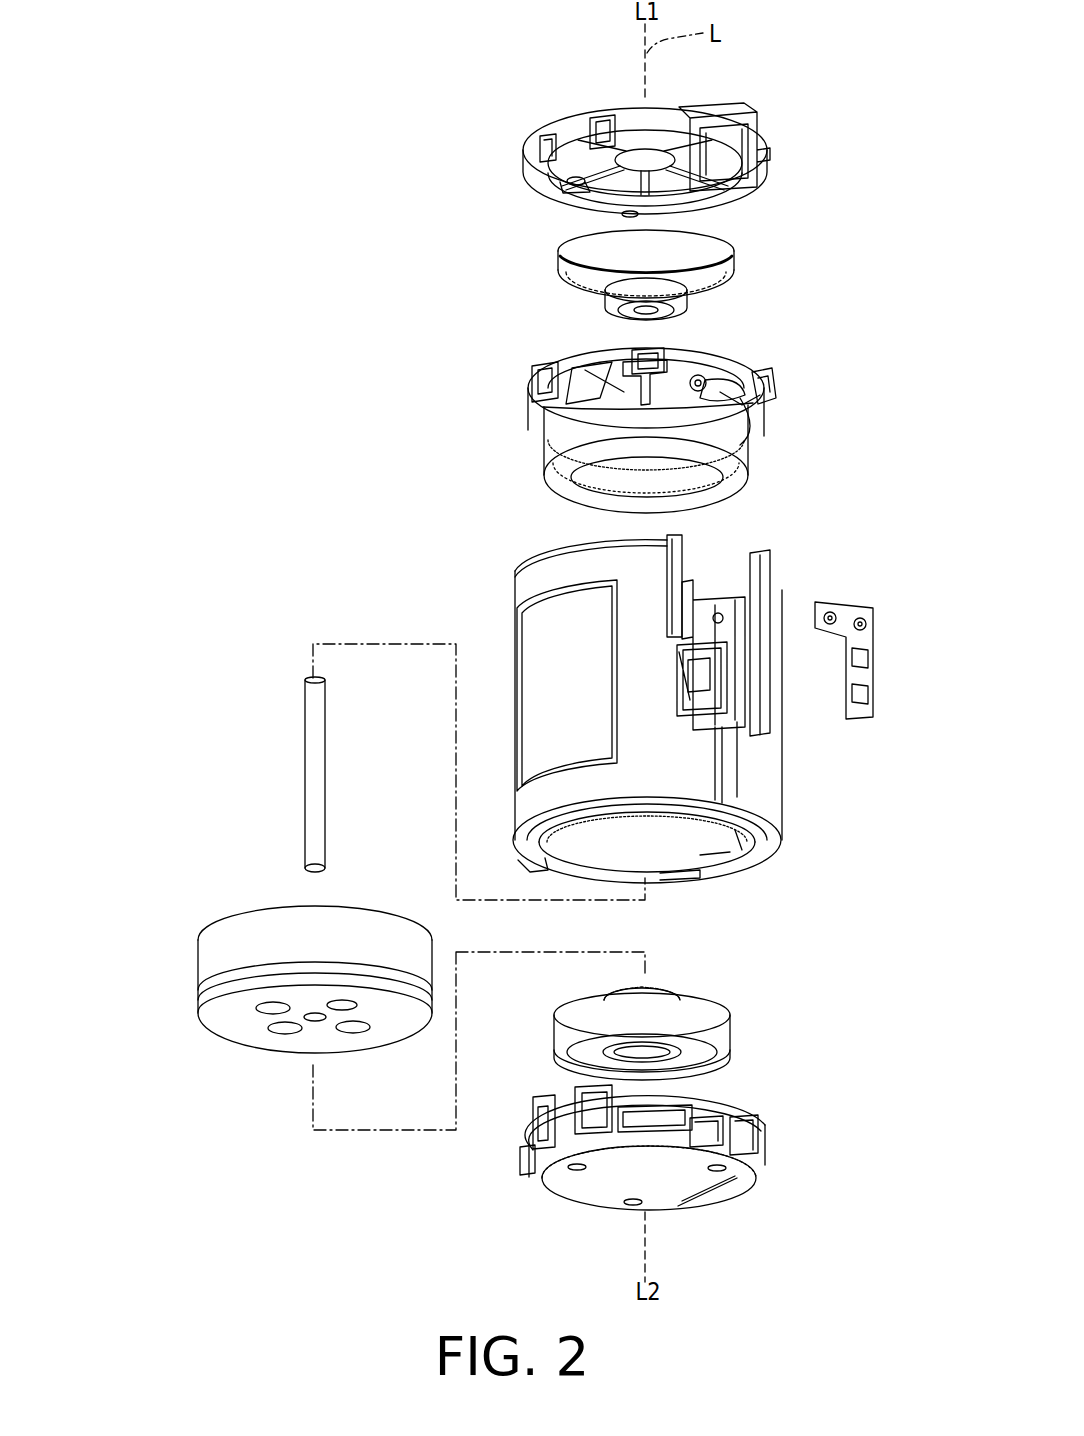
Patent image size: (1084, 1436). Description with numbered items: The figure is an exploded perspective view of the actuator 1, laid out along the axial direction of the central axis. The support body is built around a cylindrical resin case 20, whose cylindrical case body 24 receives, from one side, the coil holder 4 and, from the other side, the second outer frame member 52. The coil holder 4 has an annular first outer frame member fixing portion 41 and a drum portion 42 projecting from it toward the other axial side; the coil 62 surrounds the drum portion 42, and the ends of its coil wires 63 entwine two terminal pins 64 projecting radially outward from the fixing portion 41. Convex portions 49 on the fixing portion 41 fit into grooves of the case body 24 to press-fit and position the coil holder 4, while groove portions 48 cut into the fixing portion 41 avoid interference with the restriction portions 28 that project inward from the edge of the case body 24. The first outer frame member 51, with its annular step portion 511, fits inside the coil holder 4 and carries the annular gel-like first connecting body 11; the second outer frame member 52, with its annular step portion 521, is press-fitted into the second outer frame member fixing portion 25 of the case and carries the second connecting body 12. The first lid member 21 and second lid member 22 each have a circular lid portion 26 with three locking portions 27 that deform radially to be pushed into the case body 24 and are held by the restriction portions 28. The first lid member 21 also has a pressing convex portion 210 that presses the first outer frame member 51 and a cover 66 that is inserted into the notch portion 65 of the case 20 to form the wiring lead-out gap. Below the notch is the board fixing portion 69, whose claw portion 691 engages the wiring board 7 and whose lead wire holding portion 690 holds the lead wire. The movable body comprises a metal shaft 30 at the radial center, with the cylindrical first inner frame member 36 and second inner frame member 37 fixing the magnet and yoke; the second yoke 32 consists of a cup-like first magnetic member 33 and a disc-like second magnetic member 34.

The actuator 1 is at (279, 114).
The first lid member 21 is at (678, 145).
The lid portion 26 is at (572, 122).
The locking portion 27 is at (600, 124).
The pressing convex portion 210 is at (568, 181).
The cover 66 is at (771, 99).
The first connecting body 11 is at (697, 277).
The first outer frame member 51 is at (686, 274).
The annular step portion 511 is at (727, 288).
The first inner frame member 36 is at (613, 298).
The convex portion 49 is at (648, 350).
The terminal pin 64 is at (704, 378).
The groove portion 48 is at (597, 375).
The coil holder 4 is at (694, 414).
The first outer frame member fixing portion 41 is at (537, 435).
The coil 62 is at (553, 449).
The coil wire 63 is at (710, 390).
The drum portion 42 is at (737, 486).
The notch portion 65 is at (745, 542).
The claw portion 691 is at (719, 612).
The wiring board 7 is at (885, 640).
The board fixing portion 69 is at (732, 675).
The lead wire holding portion 690 is at (707, 692).
The case body 24 is at (773, 768).
The case 20 is at (705, 730).
The restriction portion 28 is at (535, 857).
The second outer frame member fixing portion 25 is at (707, 828).
The shaft 30 is at (305, 742).
The second yoke 32 is at (253, 979).
The first magnetic member 33 is at (205, 960).
The second magnetic member 34 is at (232, 1012).
The second inner frame member 37 is at (657, 985).
The annular step portion 521 is at (687, 993).
The second outer frame member 52 is at (721, 1002).
The second connecting body 12 is at (703, 1048).
The second lid member 22 is at (768, 1158).